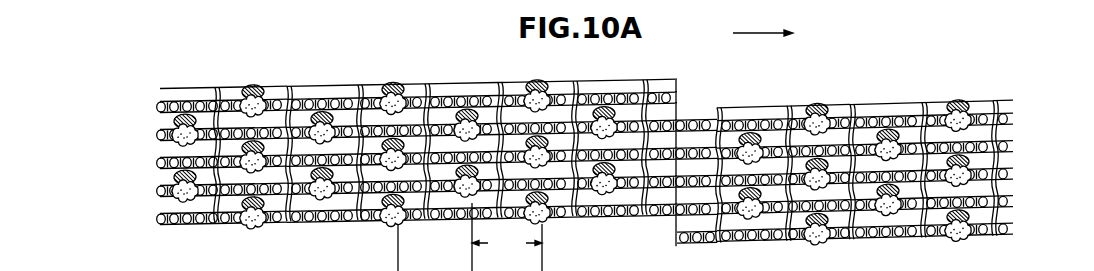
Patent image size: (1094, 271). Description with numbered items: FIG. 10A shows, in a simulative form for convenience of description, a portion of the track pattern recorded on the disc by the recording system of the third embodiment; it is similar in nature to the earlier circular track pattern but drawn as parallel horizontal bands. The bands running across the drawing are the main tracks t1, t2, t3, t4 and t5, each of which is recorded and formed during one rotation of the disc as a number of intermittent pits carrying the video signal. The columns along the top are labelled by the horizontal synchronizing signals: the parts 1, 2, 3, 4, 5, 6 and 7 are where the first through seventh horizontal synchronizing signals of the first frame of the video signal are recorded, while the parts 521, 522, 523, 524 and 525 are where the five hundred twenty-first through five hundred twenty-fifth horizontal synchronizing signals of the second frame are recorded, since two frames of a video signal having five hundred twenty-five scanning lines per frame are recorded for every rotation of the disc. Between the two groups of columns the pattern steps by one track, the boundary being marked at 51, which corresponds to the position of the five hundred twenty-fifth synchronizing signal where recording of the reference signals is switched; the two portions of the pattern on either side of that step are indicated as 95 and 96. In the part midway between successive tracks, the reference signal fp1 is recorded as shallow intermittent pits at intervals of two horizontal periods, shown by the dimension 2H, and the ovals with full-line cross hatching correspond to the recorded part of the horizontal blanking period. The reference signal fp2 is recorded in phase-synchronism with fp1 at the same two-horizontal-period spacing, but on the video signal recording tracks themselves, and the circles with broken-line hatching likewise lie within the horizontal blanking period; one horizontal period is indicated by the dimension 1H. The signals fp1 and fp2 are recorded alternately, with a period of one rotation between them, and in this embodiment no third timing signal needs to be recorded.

The first horizontal synchronizing signal part 1 is at (608, 137).
The second horizontal synchronizing signal part 2 is at (535, 141).
The third horizontal synchronizing signal part 3 is at (461, 139).
The fourth horizontal synchronizing signal part 4 is at (391, 144).
The fifth horizontal synchronizing signal part 5 is at (322, 142).
The sixth horizontal synchronizing signal part 6 is at (251, 146).
The seventh horizontal synchronizing signal part 7 is at (187, 144).
The 521st horizontal synchronizing signal part 521 is at (983, 42).
The 522nd horizontal synchronizing signal part 522 is at (913, 42).
The 523rd horizontal synchronizing signal part 523 is at (848, 42).
The 524th horizontal synchronizing signal part 524 is at (752, 147).
The 525th horizontal synchronizing signal part 525 is at (704, 42).
The first main track t1 is at (1018, 120).
The second main track t2 is at (1018, 148).
The third main track t3 is at (1018, 175).
The fourth main track t4 is at (1018, 203).
The fifth main track t5 is at (1018, 230).
The reference signal fp1 is at (805, 110).
The reference signal fp2 is at (257, 229).
The one horizontal scanning period 1H is at (507, 237).
The two horizontal scanning periods 2H is at (438, 247).
The step boundary 51 is at (706, 246).
The first fabric section 95 is at (631, 263).
The second fabric section 96 is at (829, 263).